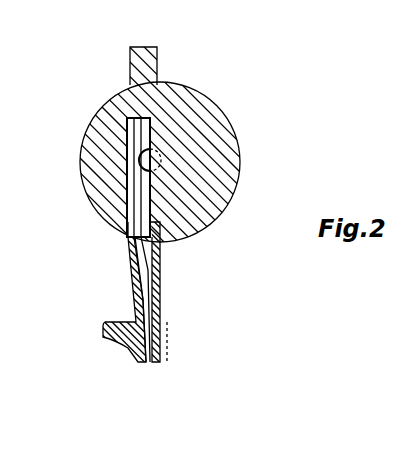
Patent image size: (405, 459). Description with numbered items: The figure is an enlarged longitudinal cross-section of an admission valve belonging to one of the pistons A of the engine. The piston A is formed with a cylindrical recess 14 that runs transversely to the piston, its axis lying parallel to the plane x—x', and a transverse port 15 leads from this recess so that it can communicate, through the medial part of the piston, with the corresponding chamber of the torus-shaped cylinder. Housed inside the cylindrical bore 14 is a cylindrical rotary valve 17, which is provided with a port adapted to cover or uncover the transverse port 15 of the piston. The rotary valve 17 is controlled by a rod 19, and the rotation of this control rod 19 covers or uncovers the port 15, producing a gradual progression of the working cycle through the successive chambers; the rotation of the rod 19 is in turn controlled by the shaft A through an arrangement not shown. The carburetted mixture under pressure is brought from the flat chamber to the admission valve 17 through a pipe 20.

The cylindrical recess 14 is at (128, 205).
The transverse port 15 is at (157, 157).
The cylindrical rotary valve 17 is at (203, 229).
The control rod 19 is at (152, 263).
The pipe 20 is at (146, 301).
The piston A is at (213, 170).